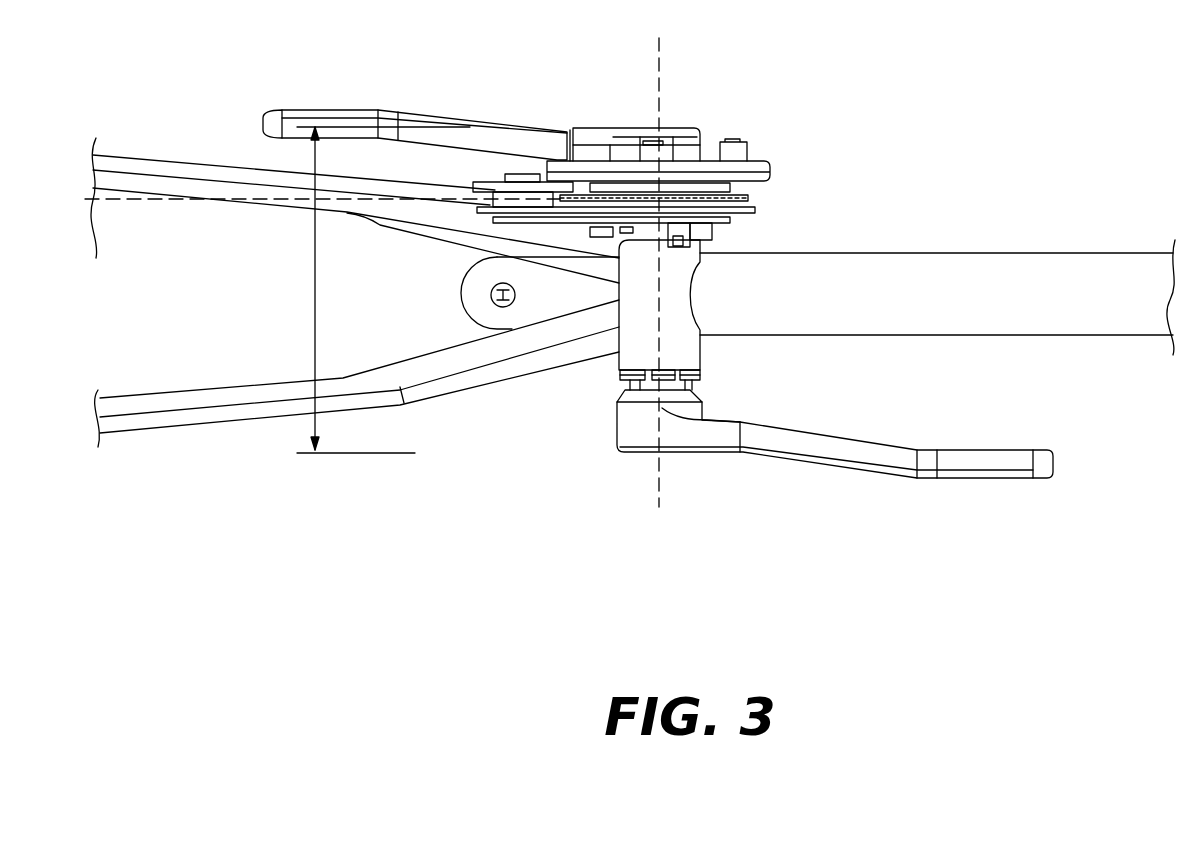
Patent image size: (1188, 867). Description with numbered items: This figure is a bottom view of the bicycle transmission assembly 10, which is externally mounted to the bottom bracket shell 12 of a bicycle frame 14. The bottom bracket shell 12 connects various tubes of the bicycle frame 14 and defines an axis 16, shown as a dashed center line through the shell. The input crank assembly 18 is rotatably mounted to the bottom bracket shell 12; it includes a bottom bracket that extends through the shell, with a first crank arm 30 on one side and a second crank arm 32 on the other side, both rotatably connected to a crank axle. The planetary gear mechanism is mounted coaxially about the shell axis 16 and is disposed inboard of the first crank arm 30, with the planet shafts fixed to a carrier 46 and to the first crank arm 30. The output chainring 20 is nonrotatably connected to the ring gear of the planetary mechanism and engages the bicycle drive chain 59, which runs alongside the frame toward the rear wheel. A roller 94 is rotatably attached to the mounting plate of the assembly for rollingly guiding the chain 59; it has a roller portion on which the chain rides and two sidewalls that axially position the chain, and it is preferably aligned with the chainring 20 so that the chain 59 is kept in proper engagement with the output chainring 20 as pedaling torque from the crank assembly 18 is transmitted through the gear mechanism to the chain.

The bicycle transmission assembly 10 is at (790, 83).
The bottom bracket shell 12 is at (690, 350).
The bicycle frame 14 is at (933, 267).
The axis 16 is at (660, 72).
The input crank assembly 18 is at (720, 130).
The output chainring 20 is at (600, 117).
The first crank arm 30 is at (473, 137).
The second crank arm 32 is at (803, 443).
The carrier 46 is at (757, 172).
The bicycle drive chain 59 is at (351, 215).
The roller 94 is at (510, 200).